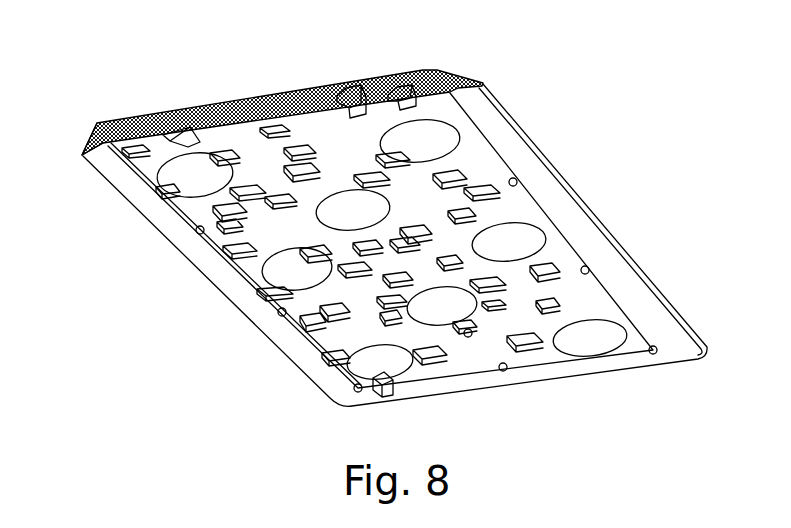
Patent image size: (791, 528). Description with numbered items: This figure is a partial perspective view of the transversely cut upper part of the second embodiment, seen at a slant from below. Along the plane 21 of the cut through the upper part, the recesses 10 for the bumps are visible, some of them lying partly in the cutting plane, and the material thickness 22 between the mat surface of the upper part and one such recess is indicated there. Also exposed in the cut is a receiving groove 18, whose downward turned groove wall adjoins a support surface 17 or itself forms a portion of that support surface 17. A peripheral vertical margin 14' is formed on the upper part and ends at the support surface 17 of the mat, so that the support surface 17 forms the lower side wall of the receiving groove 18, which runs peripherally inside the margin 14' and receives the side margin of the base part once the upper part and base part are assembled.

The recess 10 is at (340, 93).
The peripheral vertical margin 14' is at (395, 245).
The support surface 17 is at (588, 211).
The receiving groove 18 is at (96, 125).
The plane of the cut 21 is at (227, 113).
The material thickness 22 is at (357, 83).